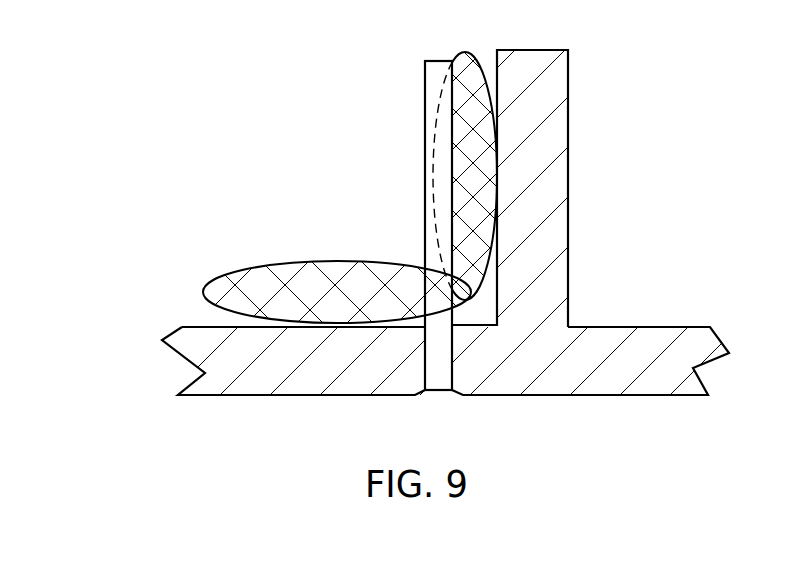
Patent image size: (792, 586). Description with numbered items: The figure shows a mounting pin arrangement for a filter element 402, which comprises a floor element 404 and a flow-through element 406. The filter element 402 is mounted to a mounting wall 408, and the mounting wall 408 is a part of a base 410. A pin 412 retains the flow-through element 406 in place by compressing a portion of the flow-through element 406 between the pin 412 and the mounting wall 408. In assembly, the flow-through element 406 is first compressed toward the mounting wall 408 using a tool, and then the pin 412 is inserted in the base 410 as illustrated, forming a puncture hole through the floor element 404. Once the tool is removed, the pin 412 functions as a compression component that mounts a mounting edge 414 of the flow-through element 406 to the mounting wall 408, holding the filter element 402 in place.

The filter element 402 is at (300, 157).
The floor element 404 is at (292, 264).
The flow-through element 406 is at (468, 51).
The mounting wall 408 is at (568, 103).
The base 410 is at (282, 394).
The pin 412 is at (425, 61).
The mounting edge 414 is at (452, 157).